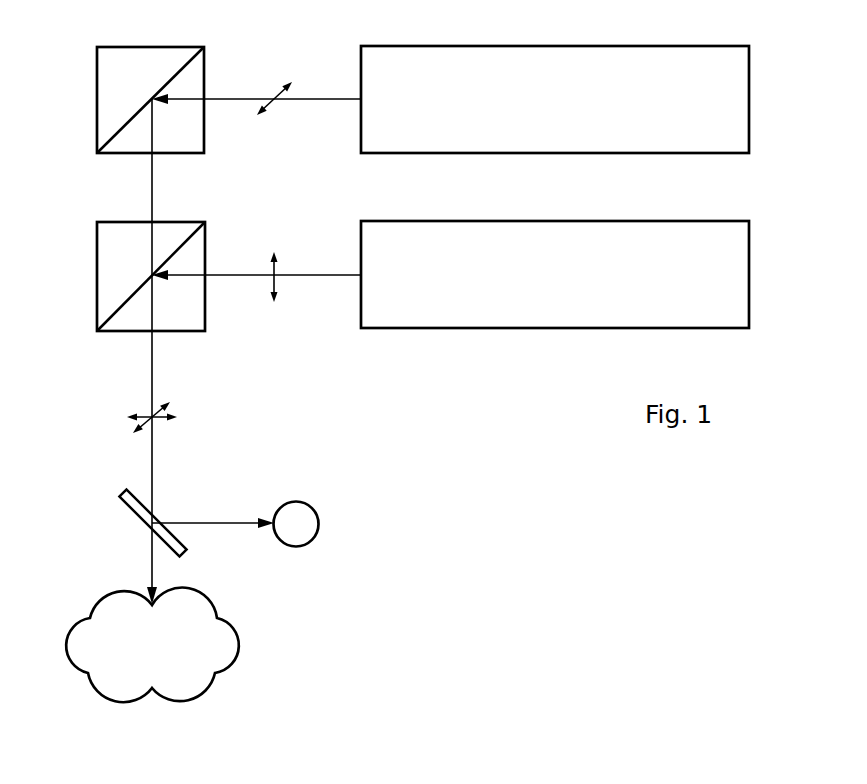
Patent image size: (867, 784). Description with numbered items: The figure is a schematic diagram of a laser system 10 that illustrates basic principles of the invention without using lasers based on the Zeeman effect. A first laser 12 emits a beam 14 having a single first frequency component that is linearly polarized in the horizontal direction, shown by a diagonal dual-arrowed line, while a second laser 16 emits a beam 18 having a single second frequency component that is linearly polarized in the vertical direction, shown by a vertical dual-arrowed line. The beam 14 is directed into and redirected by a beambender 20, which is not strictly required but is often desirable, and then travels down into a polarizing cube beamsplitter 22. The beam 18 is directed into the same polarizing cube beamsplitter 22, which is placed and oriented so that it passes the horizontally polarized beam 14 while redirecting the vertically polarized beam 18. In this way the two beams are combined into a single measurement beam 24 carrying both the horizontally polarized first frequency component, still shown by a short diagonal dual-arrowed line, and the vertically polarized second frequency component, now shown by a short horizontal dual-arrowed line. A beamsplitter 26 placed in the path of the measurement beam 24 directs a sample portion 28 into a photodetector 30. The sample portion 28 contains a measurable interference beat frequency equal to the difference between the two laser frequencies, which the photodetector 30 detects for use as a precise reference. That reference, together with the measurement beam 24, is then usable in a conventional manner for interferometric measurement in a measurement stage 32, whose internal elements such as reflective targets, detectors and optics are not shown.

The laser system 10 is at (417, 428).
The first laser 12 is at (540, 110).
The beam 14 is at (326, 99).
The second laser 16 is at (540, 286).
The beam 18 is at (326, 275).
The beambender 20 is at (133, 76).
The polarizing cube beamsplitter 22 is at (133, 251).
The measurement beam 24 is at (152, 356).
The beamsplitter 26 is at (121, 494).
The sample portion 28 is at (207, 523).
The photodetector 30 is at (283, 534).
The measurement stage 32 is at (139, 659).